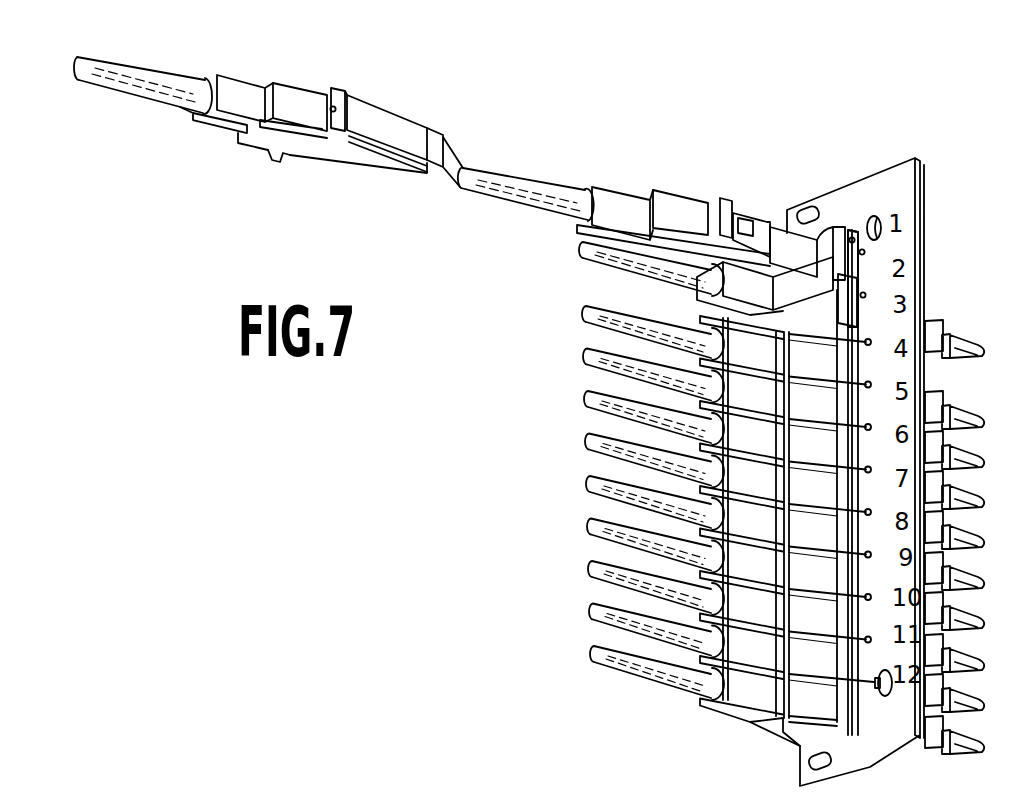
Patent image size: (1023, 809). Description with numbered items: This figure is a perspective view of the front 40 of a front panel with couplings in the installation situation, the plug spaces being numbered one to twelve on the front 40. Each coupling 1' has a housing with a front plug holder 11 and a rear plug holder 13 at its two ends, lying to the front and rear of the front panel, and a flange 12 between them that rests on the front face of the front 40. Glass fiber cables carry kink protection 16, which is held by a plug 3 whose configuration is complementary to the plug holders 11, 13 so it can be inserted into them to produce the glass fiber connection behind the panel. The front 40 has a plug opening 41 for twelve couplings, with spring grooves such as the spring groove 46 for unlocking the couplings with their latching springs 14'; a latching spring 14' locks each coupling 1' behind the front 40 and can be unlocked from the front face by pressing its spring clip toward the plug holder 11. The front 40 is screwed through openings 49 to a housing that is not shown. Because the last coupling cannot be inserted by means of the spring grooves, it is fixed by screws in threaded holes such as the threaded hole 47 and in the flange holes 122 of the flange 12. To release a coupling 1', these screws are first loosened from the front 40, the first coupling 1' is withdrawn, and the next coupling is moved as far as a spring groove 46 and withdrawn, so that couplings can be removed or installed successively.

The kink protection 16 is at (153, 78).
The plug 3 is at (250, 93).
The plug holder 11 is at (294, 98).
The flange 12 is at (341, 89).
The plug holder 13 is at (365, 117).
The coupling 1' is at (482, 185).
The flange holes 122 is at (331, 142).
The latching spring 14' is at (755, 215).
The front 40 is at (893, 170).
The plug opening 41 is at (836, 242).
The threaded hole 47 is at (856, 232).
The openings 49 is at (881, 234).
The spring groove 46 is at (866, 256).